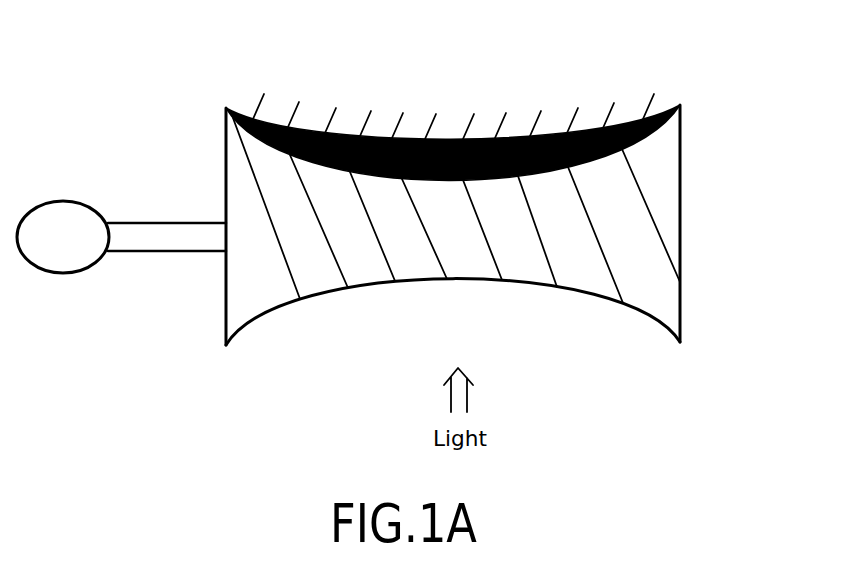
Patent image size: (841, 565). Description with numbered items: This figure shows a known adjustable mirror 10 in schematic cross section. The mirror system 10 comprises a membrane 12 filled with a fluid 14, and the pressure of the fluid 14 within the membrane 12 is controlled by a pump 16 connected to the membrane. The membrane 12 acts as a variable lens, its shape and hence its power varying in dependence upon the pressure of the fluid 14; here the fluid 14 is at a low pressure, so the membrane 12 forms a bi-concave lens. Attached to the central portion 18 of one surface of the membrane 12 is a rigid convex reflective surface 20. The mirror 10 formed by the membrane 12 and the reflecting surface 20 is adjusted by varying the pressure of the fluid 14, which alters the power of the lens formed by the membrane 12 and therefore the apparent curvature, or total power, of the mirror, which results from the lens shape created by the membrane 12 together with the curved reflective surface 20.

The adjustable mirror 10 is at (688, 348).
The membrane 12 is at (328, 295).
The fluid 14 is at (263, 283).
The pump 16 is at (63, 273).
The central portion 18 is at (480, 218).
The rigid convex reflective surface 20 is at (614, 98).